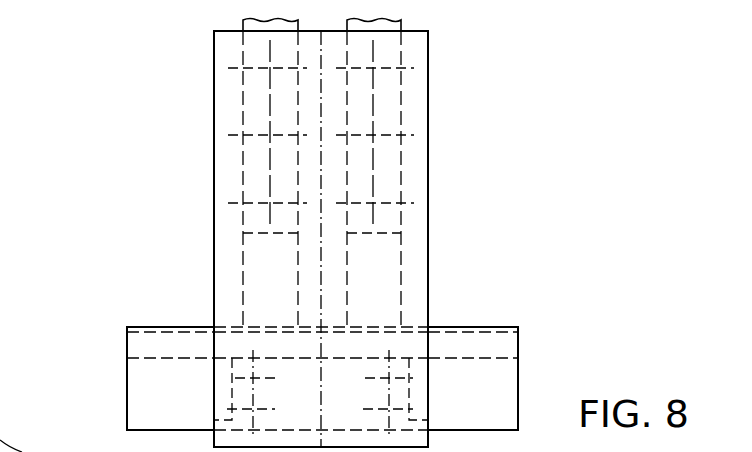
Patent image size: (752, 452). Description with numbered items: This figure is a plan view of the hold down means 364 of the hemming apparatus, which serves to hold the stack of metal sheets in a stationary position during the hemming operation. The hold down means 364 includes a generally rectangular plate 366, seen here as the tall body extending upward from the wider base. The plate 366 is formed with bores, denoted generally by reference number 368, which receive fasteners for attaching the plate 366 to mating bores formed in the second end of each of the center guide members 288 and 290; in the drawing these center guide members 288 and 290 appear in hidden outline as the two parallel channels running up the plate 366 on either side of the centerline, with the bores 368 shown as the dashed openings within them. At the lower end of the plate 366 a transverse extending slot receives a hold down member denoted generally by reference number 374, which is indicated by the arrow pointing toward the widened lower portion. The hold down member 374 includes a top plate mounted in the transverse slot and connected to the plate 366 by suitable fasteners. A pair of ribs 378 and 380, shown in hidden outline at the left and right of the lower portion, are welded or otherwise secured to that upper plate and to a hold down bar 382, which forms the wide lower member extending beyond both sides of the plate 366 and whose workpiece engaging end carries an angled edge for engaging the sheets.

The hold down means 364 is at (446, 182).
The plate 366 is at (229, 247).
The bores 368 is at (258, 55).
The center guide member 290 is at (262, 158).
The center guide member 288 is at (390, 168).
The hold down member 374 is at (141, 292).
The rib 378 is at (225, 400).
The rib 380 is at (421, 388).
The hold down bar 382 is at (140, 348).